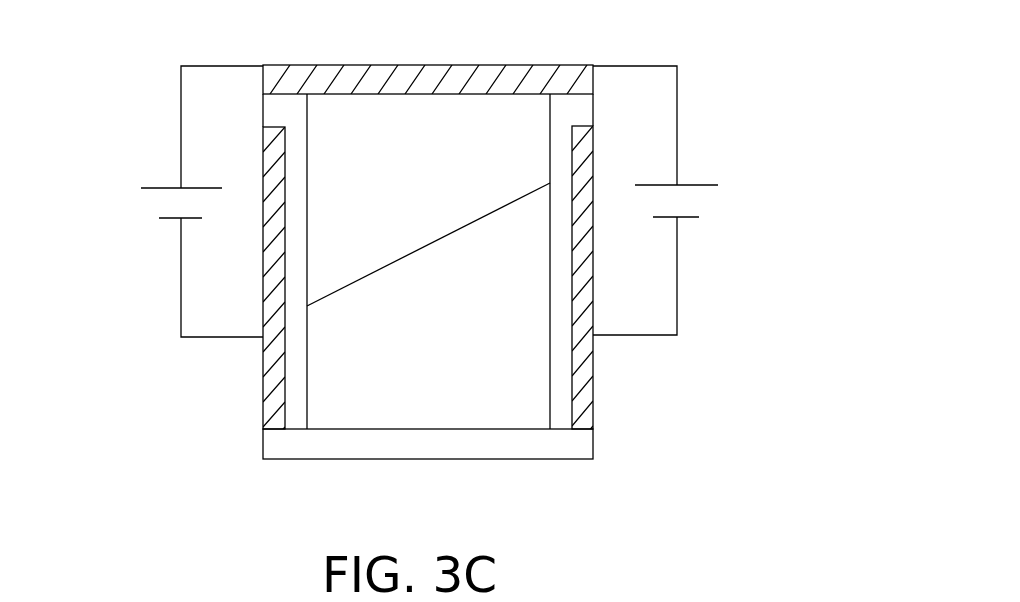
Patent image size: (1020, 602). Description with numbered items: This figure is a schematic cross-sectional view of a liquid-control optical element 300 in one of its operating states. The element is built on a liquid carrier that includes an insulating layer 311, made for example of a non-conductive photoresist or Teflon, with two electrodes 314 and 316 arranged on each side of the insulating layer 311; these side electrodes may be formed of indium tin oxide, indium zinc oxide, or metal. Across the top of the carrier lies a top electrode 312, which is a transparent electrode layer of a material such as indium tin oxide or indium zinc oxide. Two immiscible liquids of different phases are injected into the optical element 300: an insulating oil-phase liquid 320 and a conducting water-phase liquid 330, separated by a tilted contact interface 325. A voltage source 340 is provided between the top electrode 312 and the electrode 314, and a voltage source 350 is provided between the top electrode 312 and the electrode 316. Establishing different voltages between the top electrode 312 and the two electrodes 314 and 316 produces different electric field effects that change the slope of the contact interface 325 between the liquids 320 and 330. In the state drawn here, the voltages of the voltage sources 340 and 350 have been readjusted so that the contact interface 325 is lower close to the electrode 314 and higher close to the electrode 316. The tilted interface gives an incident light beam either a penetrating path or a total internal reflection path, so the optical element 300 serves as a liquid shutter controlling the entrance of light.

The liquid-control optical element 300 is at (713, 507).
The insulating layer 311 is at (577, 110).
The top electrode 312 is at (307, 82).
The electrode 314 is at (273, 393).
The electrode 316 is at (582, 387).
The oil-phase liquid 320 is at (370, 136).
The contact interface 325 is at (460, 228).
The water-phase liquid 330 is at (368, 413).
The voltage source 340 is at (156, 152).
The voltage source 350 is at (716, 151).